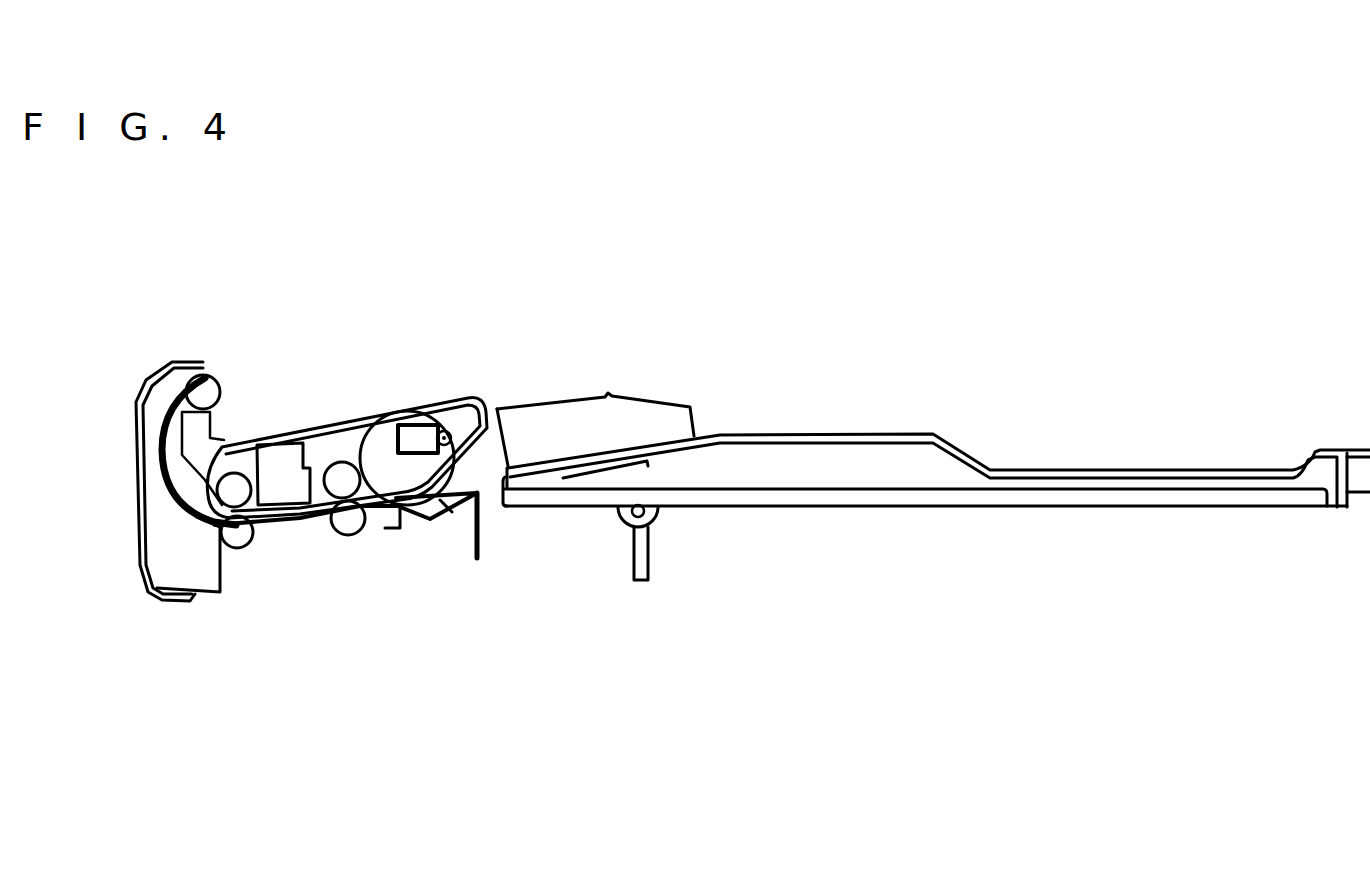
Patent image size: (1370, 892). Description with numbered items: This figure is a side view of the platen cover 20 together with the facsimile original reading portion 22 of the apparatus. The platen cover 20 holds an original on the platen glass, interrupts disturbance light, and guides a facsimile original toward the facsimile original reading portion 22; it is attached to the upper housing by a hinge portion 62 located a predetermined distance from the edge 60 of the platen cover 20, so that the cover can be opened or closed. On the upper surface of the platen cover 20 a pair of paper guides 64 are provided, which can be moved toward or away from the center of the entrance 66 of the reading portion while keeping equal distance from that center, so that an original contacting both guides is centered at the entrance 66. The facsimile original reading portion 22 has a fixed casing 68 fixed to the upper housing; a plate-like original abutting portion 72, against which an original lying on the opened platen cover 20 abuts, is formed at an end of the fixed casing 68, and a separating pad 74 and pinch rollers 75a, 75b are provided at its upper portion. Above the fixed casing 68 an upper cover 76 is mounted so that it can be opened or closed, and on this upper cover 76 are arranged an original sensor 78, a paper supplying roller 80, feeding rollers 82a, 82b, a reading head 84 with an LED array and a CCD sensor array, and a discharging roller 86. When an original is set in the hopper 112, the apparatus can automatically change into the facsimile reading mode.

The platen cover 20 is at (840, 372).
The facsimile original reading portion 22 is at (348, 293).
The edge of the platen cover 60 is at (505, 500).
The hinge portion 62 is at (655, 512).
The paper guide 64 is at (572, 407).
The entrance 66 is at (483, 478).
The fixed casing 68 is at (290, 510).
The original abutting portion 72 is at (477, 562).
The separating pad 74 is at (442, 520).
The pinch roller 75a is at (350, 535).
The pinch roller 75b is at (247, 548).
The upper cover 76 is at (340, 462).
The original sensor 78 is at (470, 405).
The paper supplying roller 80 is at (392, 420).
The feeding roller 82a is at (360, 425).
The feeding roller 82b is at (232, 473).
The reading head 84 is at (302, 432).
The discharging roller 86 is at (207, 384).
The hopper 112 is at (481, 452).